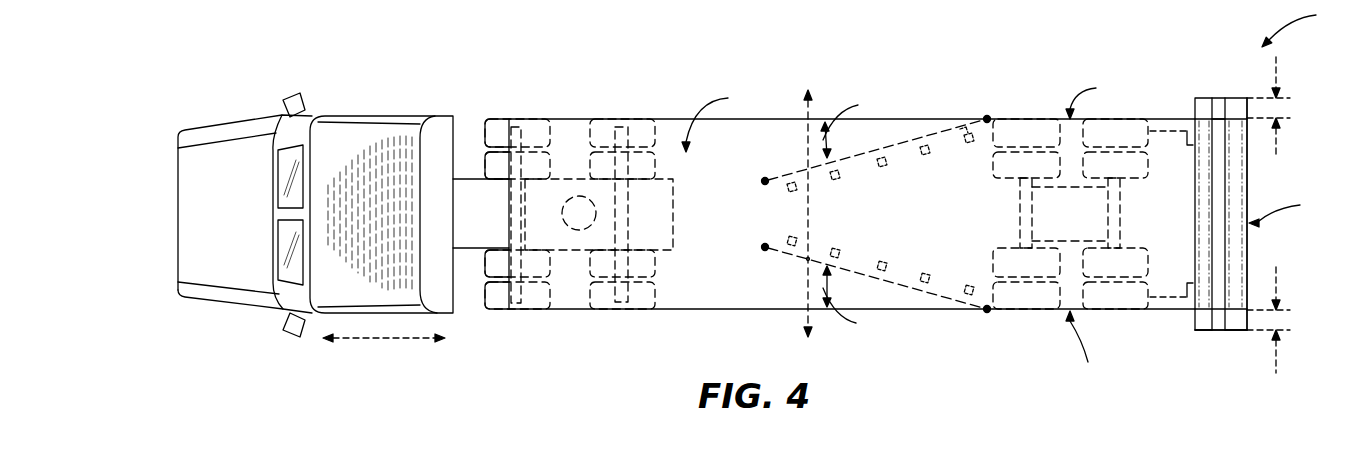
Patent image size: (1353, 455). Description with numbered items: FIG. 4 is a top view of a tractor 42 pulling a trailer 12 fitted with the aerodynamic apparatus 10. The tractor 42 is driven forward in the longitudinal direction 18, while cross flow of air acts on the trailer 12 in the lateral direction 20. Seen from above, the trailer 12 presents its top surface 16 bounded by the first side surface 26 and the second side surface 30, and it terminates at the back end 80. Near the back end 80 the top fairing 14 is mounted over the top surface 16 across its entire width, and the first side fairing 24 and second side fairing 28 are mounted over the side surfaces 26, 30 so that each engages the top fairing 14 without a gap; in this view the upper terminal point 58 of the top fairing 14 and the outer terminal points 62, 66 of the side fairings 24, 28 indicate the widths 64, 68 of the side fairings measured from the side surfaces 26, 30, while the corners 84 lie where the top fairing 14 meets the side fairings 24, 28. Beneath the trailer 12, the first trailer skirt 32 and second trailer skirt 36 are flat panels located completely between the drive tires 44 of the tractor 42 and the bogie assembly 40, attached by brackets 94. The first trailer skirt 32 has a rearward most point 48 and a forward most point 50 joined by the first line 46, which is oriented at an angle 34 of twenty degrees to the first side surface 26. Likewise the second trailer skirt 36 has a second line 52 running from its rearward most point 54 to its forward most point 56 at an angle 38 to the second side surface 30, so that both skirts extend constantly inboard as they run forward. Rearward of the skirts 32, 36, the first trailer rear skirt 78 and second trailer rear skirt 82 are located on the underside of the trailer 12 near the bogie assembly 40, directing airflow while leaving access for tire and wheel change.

The apparatus 10 is at (1305, 24).
The trailer 12 is at (563, 119).
The top fairing 14 is at (1233, 273).
The top surface 16 is at (724, 119).
The longitudinal direction 18 is at (383, 338).
The lateral direction 20 is at (810, 218).
The first side fairing 24 is at (1200, 330).
The first side surface 26 is at (1087, 352).
The second side fairing 28 is at (1203, 100).
The second side surface 30 is at (1070, 191).
The first trailer skirt 32 is at (888, 283).
The angle 34 is at (848, 311).
The second trailer skirt 36 is at (917, 140).
The angle 38 is at (847, 117).
The bogie assembly 40 is at (1100, 205).
The tractor 42 is at (382, 115).
The drive tires 44 is at (607, 119).
The first line 46 is at (808, 258).
The rearward most point 48 is at (988, 311).
The forward most point 50 is at (765, 247).
The second line 52 is at (970, 124).
The rearward most point 54 is at (988, 119).
The forward most point 56 is at (765, 181).
The upper terminal point 58 is at (1220, 198).
The outer terminal point 62 is at (1247, 332).
The width 64 is at (1276, 355).
The outer terminal point 66 is at (1244, 100).
The width 68 is at (1276, 70).
The first trailer rear skirt 78 is at (1163, 310).
The back end 80 is at (1264, 214).
The second trailer rear skirt 82 is at (1165, 129).
The corner 84 is at (1212, 332).
The brackets 94 is at (877, 162).